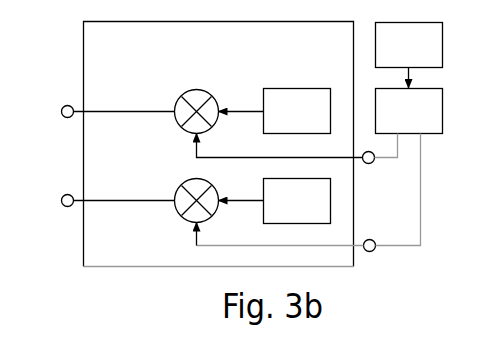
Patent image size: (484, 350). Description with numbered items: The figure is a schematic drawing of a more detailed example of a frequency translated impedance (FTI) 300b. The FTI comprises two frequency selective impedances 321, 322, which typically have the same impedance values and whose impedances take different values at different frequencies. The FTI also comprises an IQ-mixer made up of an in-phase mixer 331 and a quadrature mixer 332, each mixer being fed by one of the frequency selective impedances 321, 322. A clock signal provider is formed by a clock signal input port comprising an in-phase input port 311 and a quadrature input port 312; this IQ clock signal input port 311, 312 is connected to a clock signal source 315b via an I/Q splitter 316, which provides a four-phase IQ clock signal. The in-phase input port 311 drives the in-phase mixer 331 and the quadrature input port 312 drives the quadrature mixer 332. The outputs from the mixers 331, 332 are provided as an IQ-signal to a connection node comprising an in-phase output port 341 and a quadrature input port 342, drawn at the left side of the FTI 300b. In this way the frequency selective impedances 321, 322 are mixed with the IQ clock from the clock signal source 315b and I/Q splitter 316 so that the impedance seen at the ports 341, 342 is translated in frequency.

The frequency translated impedance 300b is at (219, 144).
The clock signal source 315b is at (409, 56).
The I/Q splitter 316 is at (409, 111).
The frequency selective impedance 321 is at (275, 111).
The frequency selective impedance 322 is at (275, 201).
The in-phase mixer 331 is at (174, 108).
The quadrature mixer 332 is at (174, 206).
The in-phase output port 341 is at (66, 118).
The quadrature input port 342 is at (66, 206).
The in-phase input port 311 is at (374, 162).
The quadrature input port 312 is at (374, 250).